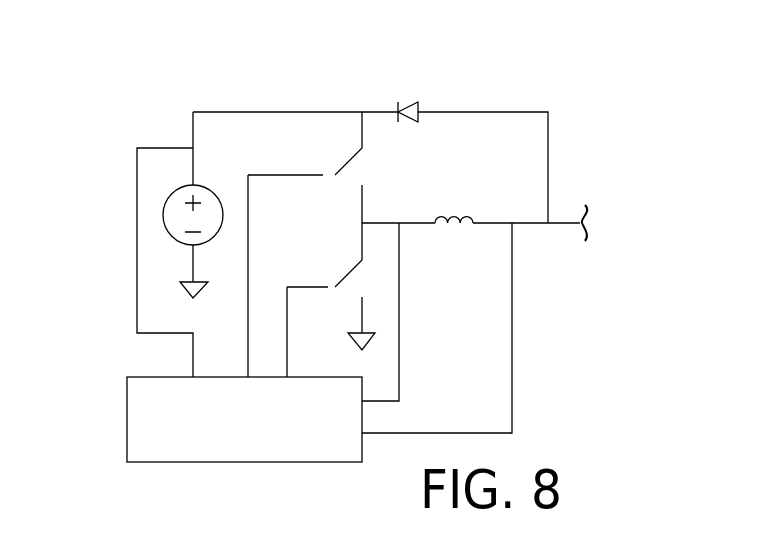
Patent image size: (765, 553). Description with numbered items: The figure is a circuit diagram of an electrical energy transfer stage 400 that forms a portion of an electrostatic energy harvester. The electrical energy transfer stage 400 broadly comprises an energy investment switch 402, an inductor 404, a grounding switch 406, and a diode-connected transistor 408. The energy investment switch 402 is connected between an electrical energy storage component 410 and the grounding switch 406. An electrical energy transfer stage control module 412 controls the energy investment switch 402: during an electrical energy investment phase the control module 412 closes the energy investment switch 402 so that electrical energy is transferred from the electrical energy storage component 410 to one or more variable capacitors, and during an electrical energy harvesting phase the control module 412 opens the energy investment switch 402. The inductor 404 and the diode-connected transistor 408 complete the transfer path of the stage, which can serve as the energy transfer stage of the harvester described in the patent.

The electrical energy transfer stage 400 is at (152, 66).
The energy investment switch 402 is at (348, 181).
The inductor 404 is at (454, 208).
The grounding switch 406 is at (348, 292).
The diode-connected transistor 408 is at (408, 90).
The electrical energy storage component 410 is at (211, 180).
The electrical energy transfer stage control module 412 is at (285, 462).